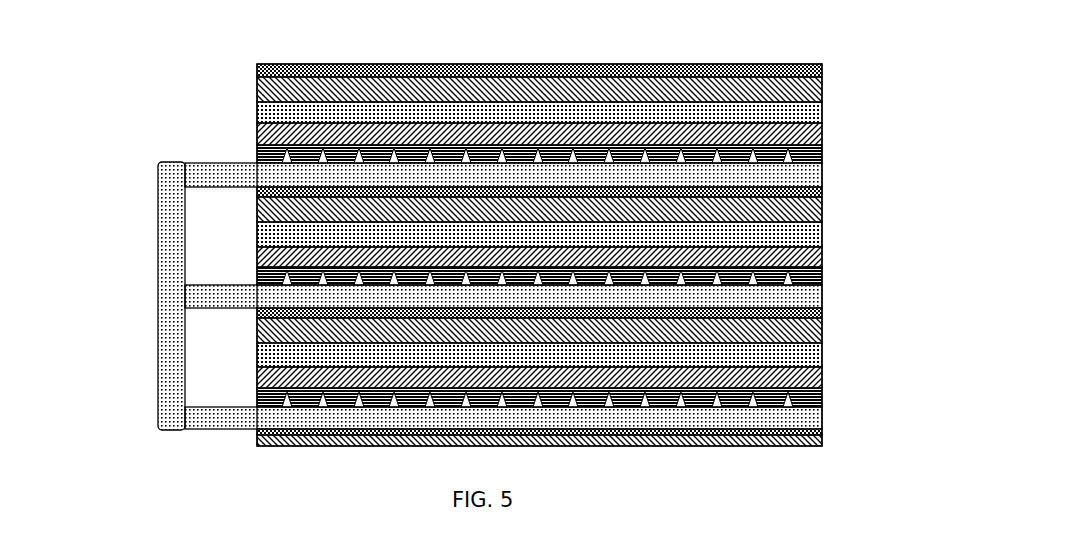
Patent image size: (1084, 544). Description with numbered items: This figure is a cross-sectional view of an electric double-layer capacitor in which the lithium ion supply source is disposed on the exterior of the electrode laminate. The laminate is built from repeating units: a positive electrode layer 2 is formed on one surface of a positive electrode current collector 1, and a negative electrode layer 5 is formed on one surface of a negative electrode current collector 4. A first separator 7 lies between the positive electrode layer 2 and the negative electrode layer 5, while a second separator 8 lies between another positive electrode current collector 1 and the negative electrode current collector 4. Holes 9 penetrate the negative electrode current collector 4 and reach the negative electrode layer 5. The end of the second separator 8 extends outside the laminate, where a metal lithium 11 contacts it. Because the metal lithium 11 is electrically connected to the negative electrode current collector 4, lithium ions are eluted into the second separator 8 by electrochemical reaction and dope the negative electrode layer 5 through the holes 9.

The positive electrode current collector 1 is at (822, 74).
The positive electrode layer 2 is at (822, 96).
The negative electrode current collector 4 is at (812, 158).
The negative electrode layer 5 is at (258, 137).
The first separator 7 is at (258, 113).
The second separator 8 is at (814, 180).
The holes 9 is at (787, 282).
The metal lithium 11 is at (160, 238).